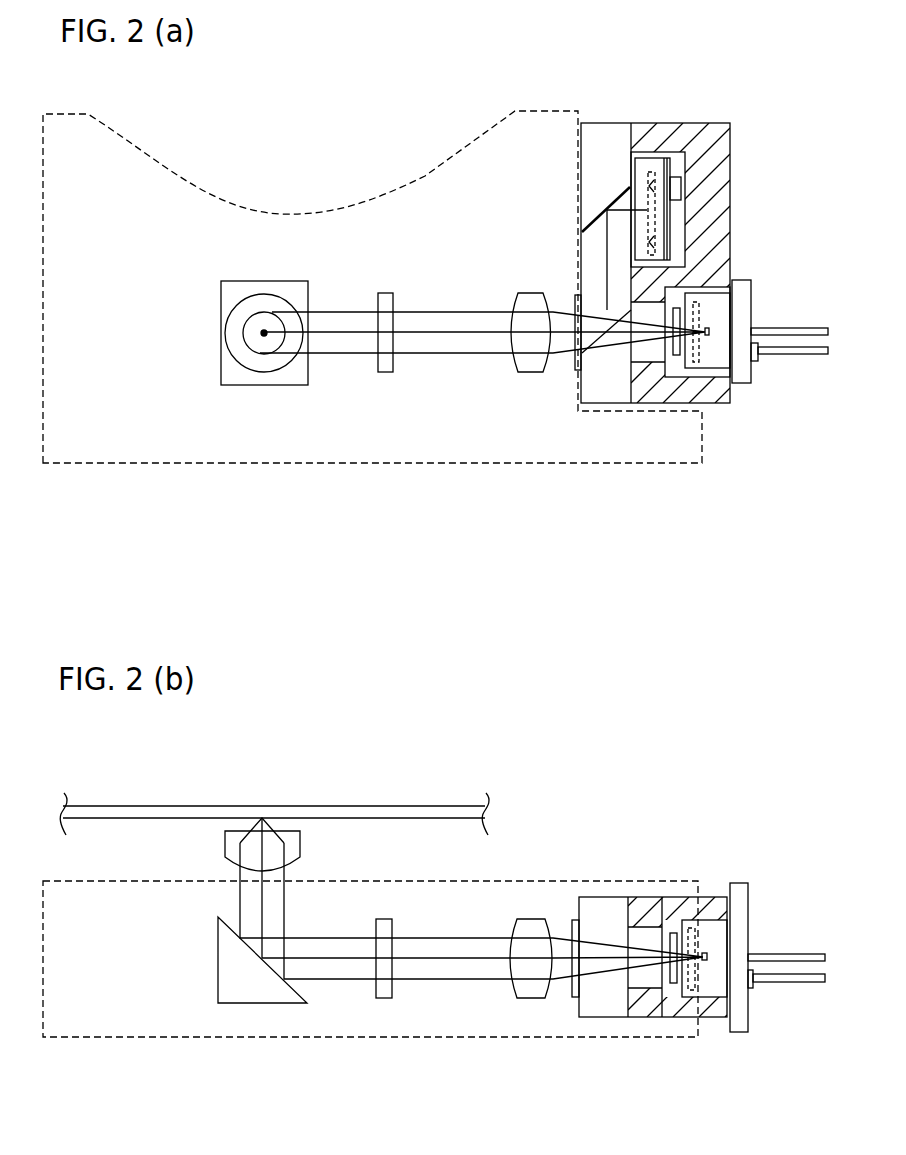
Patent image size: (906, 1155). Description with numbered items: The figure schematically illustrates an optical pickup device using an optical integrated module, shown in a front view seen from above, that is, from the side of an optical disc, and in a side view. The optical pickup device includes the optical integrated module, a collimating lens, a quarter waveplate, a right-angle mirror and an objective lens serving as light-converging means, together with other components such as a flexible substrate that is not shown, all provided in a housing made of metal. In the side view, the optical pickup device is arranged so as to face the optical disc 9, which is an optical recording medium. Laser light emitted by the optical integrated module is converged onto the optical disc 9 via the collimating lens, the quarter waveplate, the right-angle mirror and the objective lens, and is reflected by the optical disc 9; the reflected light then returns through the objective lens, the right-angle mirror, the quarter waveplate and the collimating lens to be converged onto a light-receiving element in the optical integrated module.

The optical disc 9 is at (400, 805).